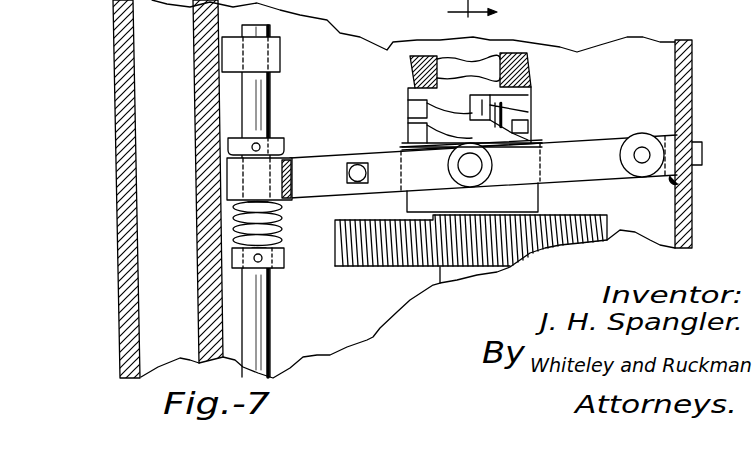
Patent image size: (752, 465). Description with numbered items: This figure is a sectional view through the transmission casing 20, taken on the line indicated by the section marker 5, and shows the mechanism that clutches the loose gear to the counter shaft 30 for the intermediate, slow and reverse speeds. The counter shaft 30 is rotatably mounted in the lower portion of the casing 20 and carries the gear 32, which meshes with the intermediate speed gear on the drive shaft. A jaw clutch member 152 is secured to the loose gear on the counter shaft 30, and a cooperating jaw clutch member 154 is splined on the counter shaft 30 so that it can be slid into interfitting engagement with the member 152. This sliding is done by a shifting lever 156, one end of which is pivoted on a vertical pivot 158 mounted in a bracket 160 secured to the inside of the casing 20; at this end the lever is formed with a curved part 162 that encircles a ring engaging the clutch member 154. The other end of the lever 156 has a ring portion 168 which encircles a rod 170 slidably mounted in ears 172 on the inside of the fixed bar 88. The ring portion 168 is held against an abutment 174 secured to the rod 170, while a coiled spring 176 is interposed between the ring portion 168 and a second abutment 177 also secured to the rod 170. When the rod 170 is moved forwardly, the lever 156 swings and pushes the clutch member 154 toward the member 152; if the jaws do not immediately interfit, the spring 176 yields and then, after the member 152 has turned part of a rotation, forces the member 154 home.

The section line 5— 5 is at (480, 11).
The transmission casing 20 is at (693, 90).
The counter shaft 30 is at (487, 62).
The gear 32 is at (385, 262).
The fixed bar 88 is at (205, 209).
The jaw clutch member 152 is at (522, 102).
The cooperating jaw clutch member 154 is at (527, 130).
The shifting lever 156 is at (379, 152).
The vertical pivot 158 is at (643, 153).
The bracket 160 is at (695, 192).
The curved part of lever 162 is at (595, 172).
The ring portion of lever 168 is at (285, 170).
The rod 170 is at (275, 320).
The ears 172 is at (275, 55).
The abutment 174 is at (278, 140).
The coiled spring 176 is at (235, 227).
The abutment 177 is at (235, 257).